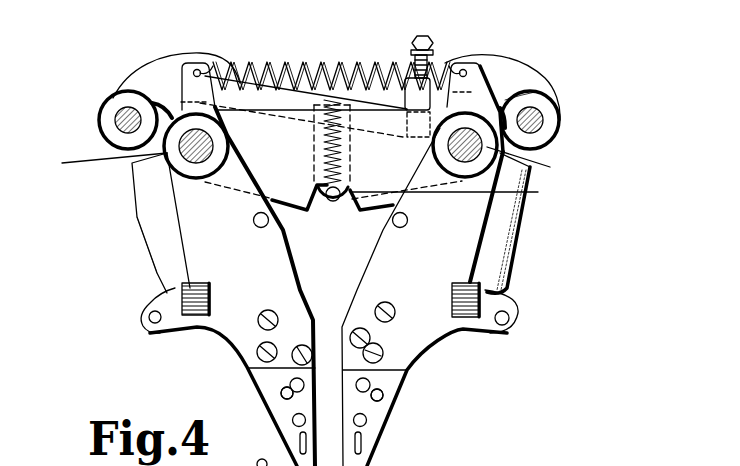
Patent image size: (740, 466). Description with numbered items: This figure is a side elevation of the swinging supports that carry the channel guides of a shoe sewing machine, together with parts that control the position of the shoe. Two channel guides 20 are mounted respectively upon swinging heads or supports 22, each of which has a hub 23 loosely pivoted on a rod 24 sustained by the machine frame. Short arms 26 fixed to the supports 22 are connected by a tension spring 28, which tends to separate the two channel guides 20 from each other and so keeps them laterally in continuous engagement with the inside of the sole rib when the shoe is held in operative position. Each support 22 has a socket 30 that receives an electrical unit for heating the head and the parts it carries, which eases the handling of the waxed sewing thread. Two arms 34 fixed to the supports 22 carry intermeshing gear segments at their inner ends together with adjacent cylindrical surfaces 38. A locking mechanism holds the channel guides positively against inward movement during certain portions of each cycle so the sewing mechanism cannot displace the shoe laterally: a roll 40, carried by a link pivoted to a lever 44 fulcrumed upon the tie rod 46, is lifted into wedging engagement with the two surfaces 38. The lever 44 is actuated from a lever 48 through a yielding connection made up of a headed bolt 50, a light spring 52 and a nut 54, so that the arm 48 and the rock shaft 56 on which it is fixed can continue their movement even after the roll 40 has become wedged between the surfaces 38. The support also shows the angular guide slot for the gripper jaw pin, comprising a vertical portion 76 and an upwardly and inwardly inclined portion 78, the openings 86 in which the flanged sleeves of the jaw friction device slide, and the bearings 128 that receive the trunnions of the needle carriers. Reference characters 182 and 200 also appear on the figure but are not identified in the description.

The channel guides 20 is at (358, 458).
The swinging supports 22 is at (200, 250).
The hubs 23 is at (307, 165).
The rods 24 is at (180, 156).
The short arms 26 is at (193, 90).
The tension spring 28 is at (315, 96).
The socket 30 is at (150, 221).
The arms 34 is at (265, 137).
The cylindrical surfaces 38 is at (353, 203).
The roll 40 is at (386, 194).
The lever 44 is at (180, 64).
The tie rod 46 is at (118, 116).
The lever 48 is at (505, 88).
The headed bolt 50 is at (427, 37).
The light spring 52 is at (413, 53).
The nut 54 is at (435, 46).
The rock shaft 56 is at (538, 116).
The vertical portion 76 is at (284, 398).
The inclined portion 78 is at (290, 384).
The openings 86 is at (397, 223).
The bearings 128 is at (306, 422).
The slot 182 is at (363, 442).
The clamp block 200 is at (190, 305).